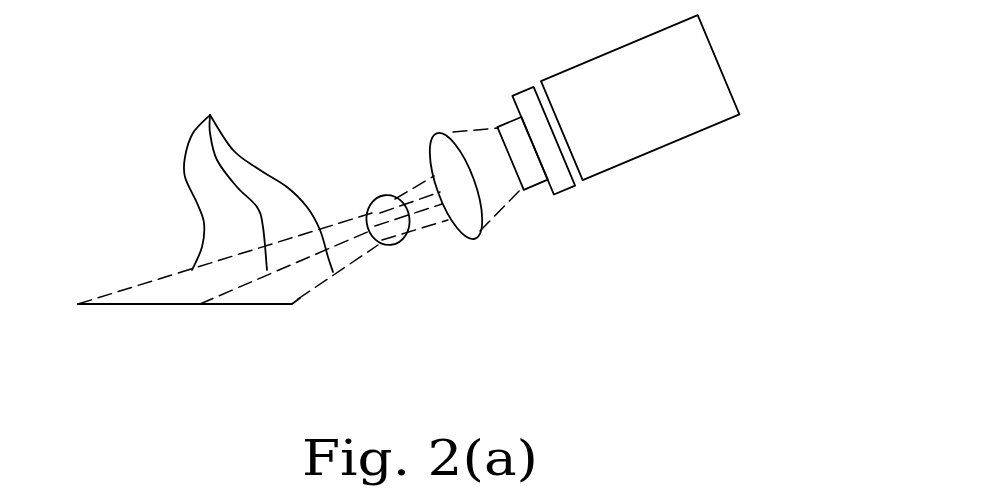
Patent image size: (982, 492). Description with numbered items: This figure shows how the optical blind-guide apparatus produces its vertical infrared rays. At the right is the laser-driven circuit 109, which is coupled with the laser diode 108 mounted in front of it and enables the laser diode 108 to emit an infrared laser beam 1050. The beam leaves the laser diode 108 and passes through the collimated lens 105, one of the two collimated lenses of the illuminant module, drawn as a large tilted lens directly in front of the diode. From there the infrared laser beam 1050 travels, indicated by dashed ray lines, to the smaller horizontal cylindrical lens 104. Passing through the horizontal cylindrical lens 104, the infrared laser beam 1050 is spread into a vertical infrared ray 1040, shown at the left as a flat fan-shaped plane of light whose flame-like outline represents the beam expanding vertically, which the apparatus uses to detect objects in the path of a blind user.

The horizontal cylindrical lens 104 is at (393, 245).
The collimated lens 105 is at (453, 142).
The laser diode 108 is at (560, 195).
The laser-driven circuit 109 is at (700, 133).
The vertical infrared ray 1040 is at (178, 305).
The infrared laser beam 1050 is at (256, 177).